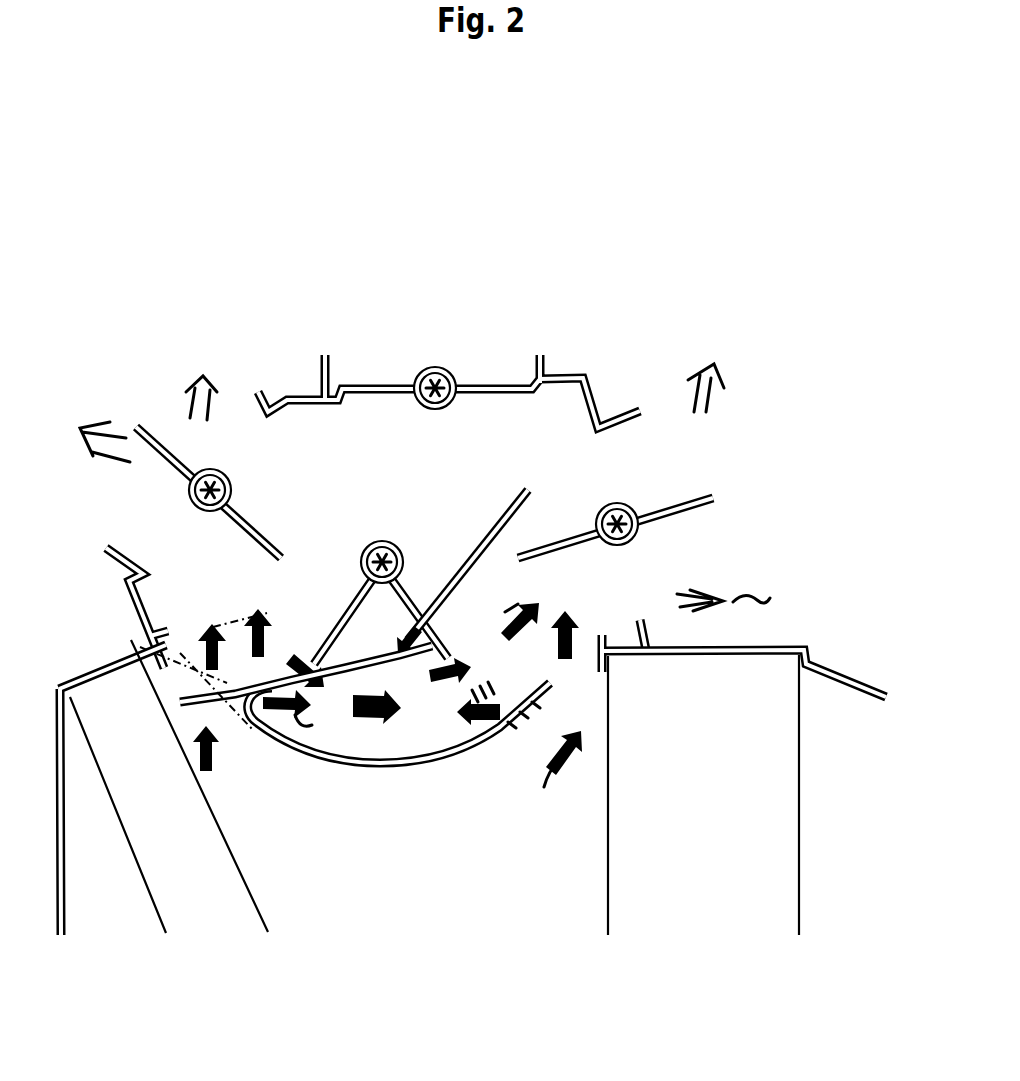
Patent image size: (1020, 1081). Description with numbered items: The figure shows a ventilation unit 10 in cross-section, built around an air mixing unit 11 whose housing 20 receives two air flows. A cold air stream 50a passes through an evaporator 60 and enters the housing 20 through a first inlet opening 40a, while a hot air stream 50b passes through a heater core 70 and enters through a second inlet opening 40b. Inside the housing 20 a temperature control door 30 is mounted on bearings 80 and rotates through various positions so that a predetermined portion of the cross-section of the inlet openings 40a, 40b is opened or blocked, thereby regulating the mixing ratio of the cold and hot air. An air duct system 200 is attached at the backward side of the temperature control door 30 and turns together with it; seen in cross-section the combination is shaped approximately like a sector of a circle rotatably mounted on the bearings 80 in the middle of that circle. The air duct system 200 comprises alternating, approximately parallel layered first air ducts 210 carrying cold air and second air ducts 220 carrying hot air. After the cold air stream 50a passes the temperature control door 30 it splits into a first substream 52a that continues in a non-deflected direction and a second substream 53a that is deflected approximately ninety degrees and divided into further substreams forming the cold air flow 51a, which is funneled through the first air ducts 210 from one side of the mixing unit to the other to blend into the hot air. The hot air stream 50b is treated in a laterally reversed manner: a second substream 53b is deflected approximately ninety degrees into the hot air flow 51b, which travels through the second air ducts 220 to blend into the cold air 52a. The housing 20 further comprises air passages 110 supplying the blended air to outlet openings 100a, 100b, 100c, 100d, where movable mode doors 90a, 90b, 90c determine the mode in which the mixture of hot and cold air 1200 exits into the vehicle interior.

The spray apparatus 10 is at (787, 362).
The air mixing unit 11 is at (606, 365).
The housing 20 is at (662, 594).
The temperature control door 30 is at (365, 747).
The first inlet opening 40a is at (605, 670).
The second inlet opening 40b is at (162, 671).
The cold air stream 50a is at (539, 728).
The hot air stream 50b is at (265, 795).
The cold air flow 51a is at (502, 686).
The hot air flow 51b is at (332, 724).
The first substream 52a is at (451, 653).
The second substream 53a is at (607, 756).
The second substream 53b is at (347, 802).
The evaporator 60 is at (744, 785).
The heater core 70 is at (163, 787).
The bearings 80 is at (387, 585).
The mode door 90a is at (208, 509).
The mode door 90b is at (449, 363).
The mode door 90c is at (615, 552).
The outlet opening 100a is at (86, 490).
The outlet opening 100b is at (265, 371).
The outlet opening 100c is at (708, 450).
The outlet opening 100d is at (761, 520).
The air passages 110 is at (435, 466).
The air duct system 200 is at (462, 571).
The first air ducts 210 is at (366, 614).
The second air ducts 220 is at (116, 655).
The mixture of hot and cold air 1200 is at (459, 439).